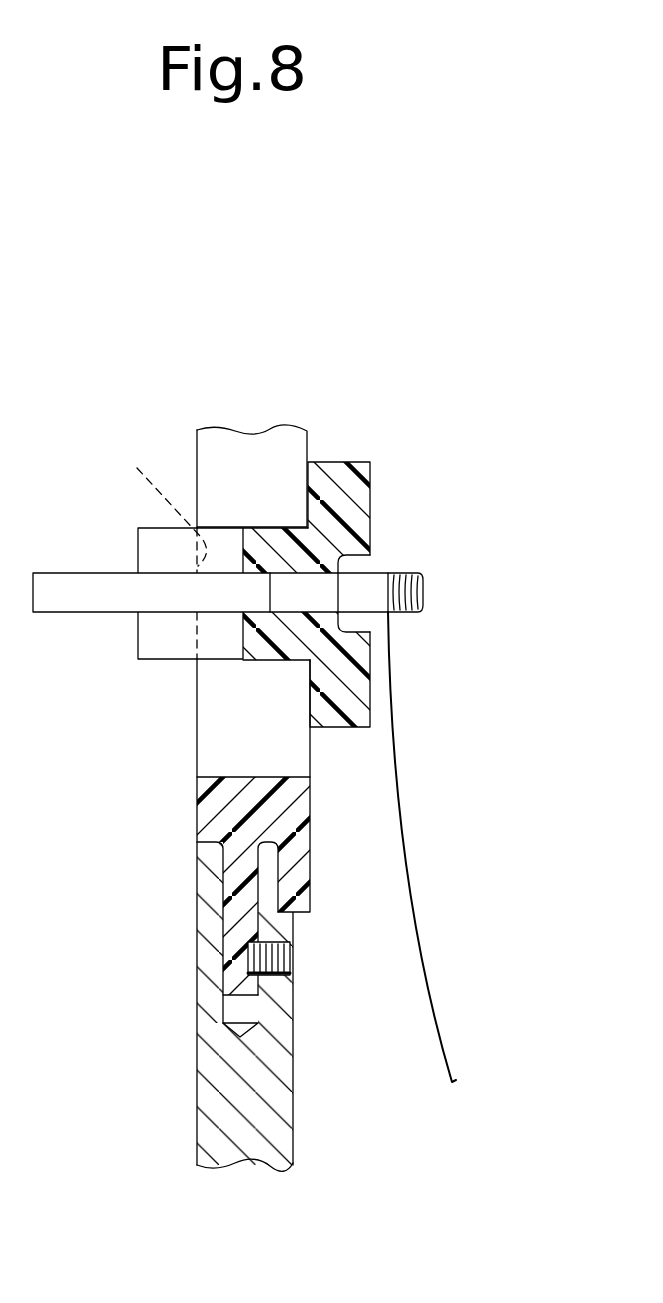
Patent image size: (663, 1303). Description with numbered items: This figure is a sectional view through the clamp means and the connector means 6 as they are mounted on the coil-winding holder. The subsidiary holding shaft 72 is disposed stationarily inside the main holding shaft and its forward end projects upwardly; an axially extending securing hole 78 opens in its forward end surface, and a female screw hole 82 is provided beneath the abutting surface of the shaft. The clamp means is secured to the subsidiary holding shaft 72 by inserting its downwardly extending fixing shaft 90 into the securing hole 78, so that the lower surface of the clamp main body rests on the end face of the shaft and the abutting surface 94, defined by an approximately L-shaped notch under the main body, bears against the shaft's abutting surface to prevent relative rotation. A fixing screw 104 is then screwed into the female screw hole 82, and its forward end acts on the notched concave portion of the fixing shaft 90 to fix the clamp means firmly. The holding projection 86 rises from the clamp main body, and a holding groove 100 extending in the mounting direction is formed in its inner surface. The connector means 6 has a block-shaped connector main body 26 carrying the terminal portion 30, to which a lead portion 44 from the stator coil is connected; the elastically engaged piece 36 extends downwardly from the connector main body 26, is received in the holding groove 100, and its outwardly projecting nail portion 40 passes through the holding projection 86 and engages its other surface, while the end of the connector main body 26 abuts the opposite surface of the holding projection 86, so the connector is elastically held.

The connector means 6 is at (267, 709).
The connector main body 26 is at (371, 703).
The terminal portion 30 is at (307, 588).
The elastically engaged piece 36 is at (213, 628).
The nail portion 40 is at (146, 504).
The lead portion 44 is at (412, 862).
The subsidiary holding shaft 72 is at (195, 1105).
The securing hole 78 is at (238, 868).
The female screw hole 82 is at (291, 960).
The holding projection 86 is at (275, 440).
The fixing shaft 90 is at (235, 937).
The abutting surface 94 is at (266, 850).
The holding groove 100 is at (272, 545).
The fixing screw 104 is at (292, 958).